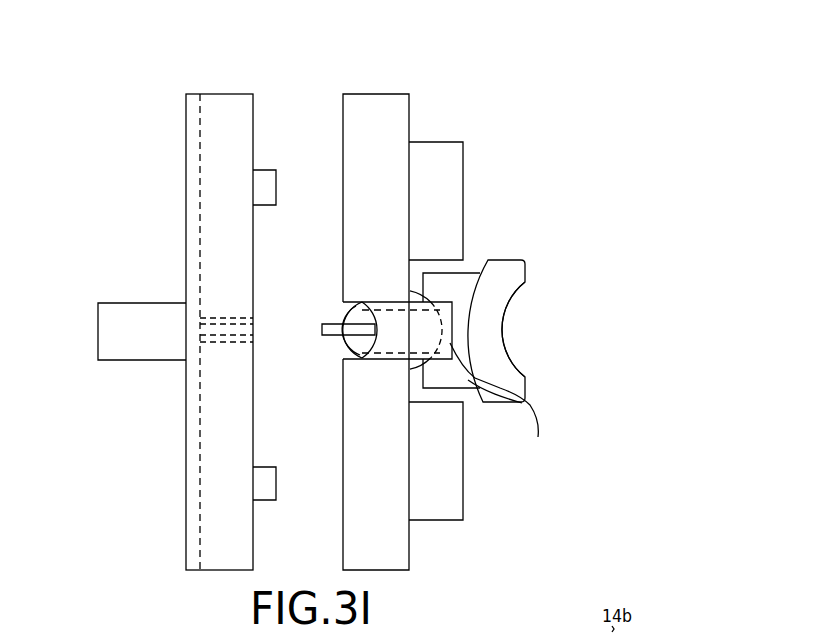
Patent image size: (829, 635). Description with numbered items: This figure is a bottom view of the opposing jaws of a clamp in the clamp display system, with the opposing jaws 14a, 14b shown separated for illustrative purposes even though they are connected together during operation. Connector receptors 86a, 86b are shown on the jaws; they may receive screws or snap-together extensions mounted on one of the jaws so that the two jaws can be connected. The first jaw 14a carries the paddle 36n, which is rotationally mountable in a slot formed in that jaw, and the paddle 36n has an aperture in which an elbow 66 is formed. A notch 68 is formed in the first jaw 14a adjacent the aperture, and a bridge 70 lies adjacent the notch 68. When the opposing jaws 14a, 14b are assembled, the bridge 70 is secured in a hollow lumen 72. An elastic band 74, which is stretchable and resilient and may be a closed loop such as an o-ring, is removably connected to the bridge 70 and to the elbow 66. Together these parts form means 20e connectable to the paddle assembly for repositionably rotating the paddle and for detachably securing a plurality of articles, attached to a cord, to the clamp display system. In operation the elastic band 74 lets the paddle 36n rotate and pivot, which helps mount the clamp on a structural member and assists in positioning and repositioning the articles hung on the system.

The first jaw 14a is at (397, 94).
The second jaw 14b is at (223, 94).
The connector receptor 86a is at (276, 481).
The connector receptor 86b is at (276, 188).
The hollow lumen 72 is at (253, 333).
The bridge 70 is at (330, 324).
The elastic band 74 is at (348, 350).
The notch 68 is at (398, 358).
The means for repositionably rotating the paddle assembly and detachably securing ar 20e is at (542, 247).
The paddle 36n is at (525, 388).
The elbow 66 is at (499, 405).